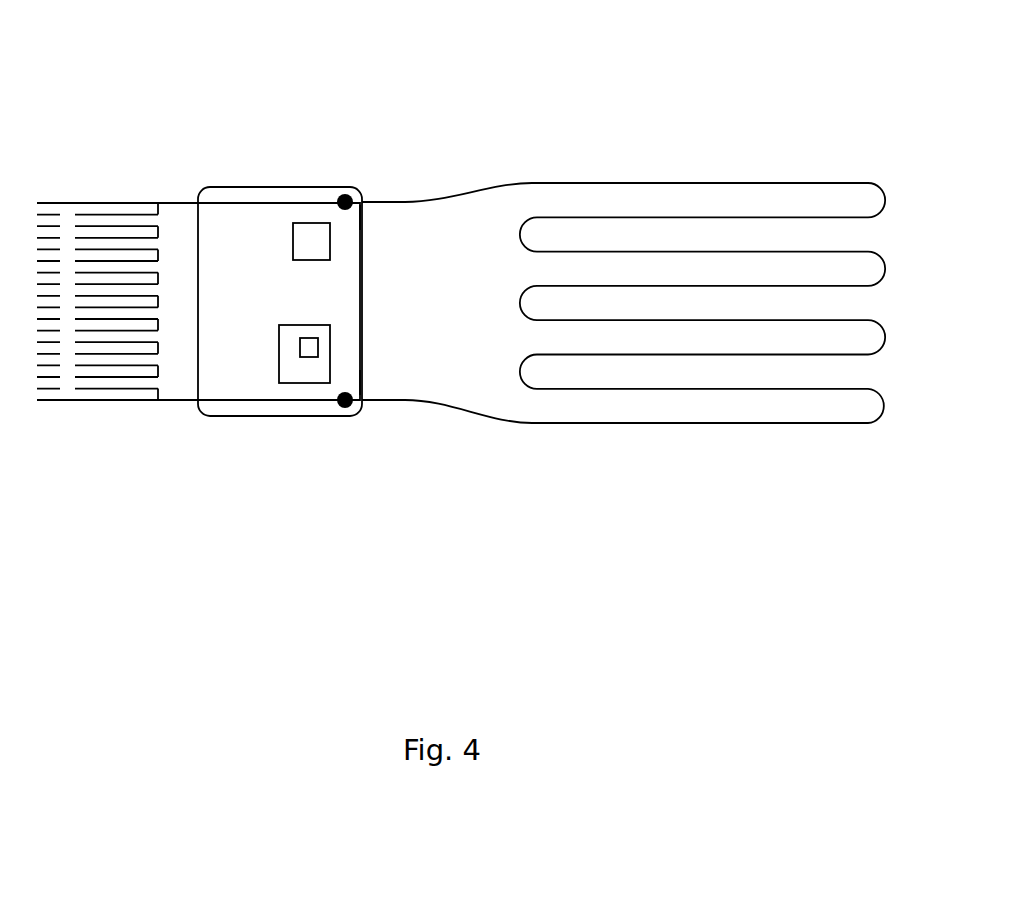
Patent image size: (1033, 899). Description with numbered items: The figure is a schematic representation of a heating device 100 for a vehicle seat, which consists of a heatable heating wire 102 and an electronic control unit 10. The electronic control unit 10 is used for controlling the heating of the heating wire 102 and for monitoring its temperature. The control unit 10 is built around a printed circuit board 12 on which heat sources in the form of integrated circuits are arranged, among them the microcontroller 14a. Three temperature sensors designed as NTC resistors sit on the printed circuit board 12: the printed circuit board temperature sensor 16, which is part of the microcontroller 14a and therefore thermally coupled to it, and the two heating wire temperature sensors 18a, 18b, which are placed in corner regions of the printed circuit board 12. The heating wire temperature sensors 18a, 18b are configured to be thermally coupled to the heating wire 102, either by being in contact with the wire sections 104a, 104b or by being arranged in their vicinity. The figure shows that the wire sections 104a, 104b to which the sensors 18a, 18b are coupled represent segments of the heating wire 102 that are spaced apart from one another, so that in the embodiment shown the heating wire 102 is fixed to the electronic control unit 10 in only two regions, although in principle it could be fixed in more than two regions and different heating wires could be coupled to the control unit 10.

The electronic control unit 10 is at (224, 142).
The printed circuit board 12 is at (297, 187).
The microcontroller 14a is at (293, 378).
The printed circuit board temperature sensor 16 is at (310, 352).
The heating wire temperature sensor 18a is at (345, 405).
The heating wire temperature sensor 18b is at (347, 200).
The heating device 100 is at (712, 117).
The heating wire 102 is at (690, 423).
The wire section 104a is at (372, 386).
The wire section 104b is at (372, 214).